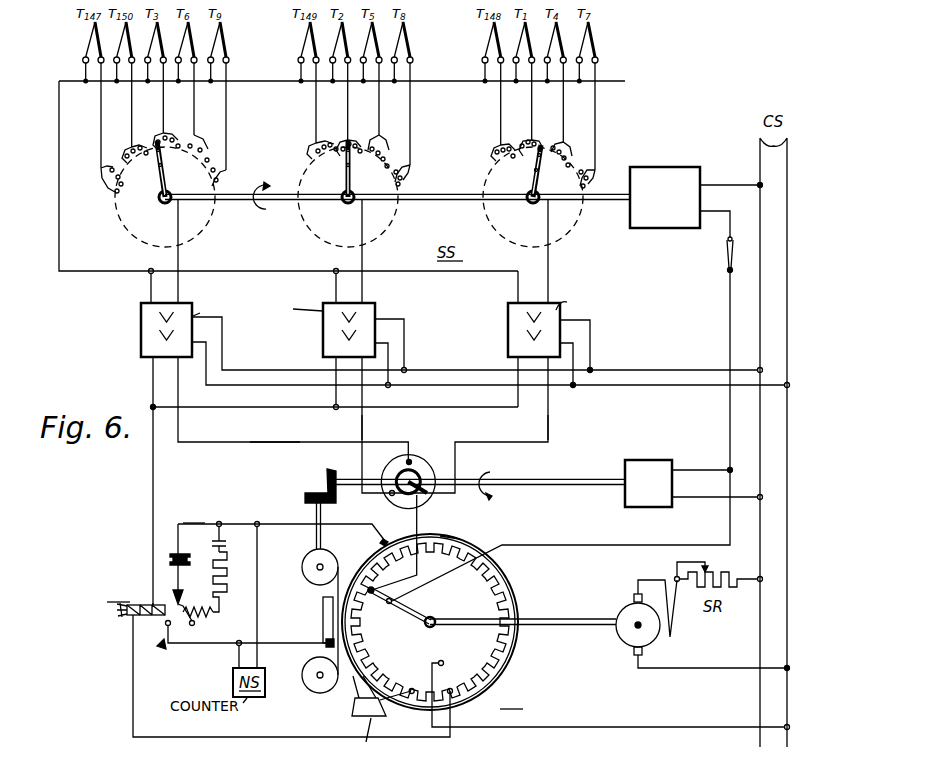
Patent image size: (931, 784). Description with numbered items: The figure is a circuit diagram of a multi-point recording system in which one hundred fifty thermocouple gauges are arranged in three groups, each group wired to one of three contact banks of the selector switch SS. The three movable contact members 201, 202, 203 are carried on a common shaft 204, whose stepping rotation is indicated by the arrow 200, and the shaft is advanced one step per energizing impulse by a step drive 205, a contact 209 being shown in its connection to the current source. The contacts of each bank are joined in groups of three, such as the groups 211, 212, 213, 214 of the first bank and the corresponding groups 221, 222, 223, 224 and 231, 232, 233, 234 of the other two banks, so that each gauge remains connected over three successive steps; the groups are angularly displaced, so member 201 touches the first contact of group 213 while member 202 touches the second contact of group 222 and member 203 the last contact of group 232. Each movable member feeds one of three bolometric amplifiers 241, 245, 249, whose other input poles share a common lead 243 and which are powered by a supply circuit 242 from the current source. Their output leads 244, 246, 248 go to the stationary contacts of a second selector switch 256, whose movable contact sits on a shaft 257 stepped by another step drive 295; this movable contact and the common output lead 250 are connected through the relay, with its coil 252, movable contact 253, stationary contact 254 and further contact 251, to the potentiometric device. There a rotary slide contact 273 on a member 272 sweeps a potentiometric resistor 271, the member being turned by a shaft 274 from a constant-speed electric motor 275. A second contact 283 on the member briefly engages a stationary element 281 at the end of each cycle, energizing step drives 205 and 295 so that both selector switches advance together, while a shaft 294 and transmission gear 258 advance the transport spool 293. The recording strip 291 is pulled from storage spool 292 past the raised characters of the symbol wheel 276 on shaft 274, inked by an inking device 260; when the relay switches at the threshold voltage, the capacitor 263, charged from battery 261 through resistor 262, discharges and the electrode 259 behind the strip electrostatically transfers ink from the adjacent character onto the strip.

The rotation direction arrow 200 is at (258, 213).
The movable contact member 201 is at (160, 194).
The movable contact member 202 is at (348, 193).
The movable contact member 203 is at (536, 182).
The common shaft 204 is at (426, 201).
The step drive 205 is at (662, 168).
The switch contact 209 is at (729, 250).
The contact group 211 is at (101, 185).
The contact group 212 is at (131, 146).
The contact group 213 is at (155, 137).
The contact group 214 is at (209, 151).
The contact bank 221 is at (317, 147).
The contact group 222 is at (342, 132).
The contact bank 223 is at (391, 144).
The contact bank 224 is at (411, 168).
The contact bank 231 is at (494, 156).
The contact group 232 is at (527, 134).
The contact bank 233 is at (575, 141).
The contact bank 234 is at (590, 178).
The amplifier 241 is at (141, 331).
The supply circuit 242 is at (422, 383).
The common lead 243 is at (248, 273).
The output lead 244 is at (270, 441).
The amplifier 245 is at (323, 331).
The output lead 246 is at (362, 428).
The output lead 248 is at (548, 428).
The amplifier 249 is at (508, 331).
The common output lead 250 is at (152, 516).
The switch contact 251 is at (232, 639).
The relay coil 252 is at (140, 617).
The relay contact 253 is at (195, 605).
The stationary contact 254 is at (195, 626).
The selector switch 256 is at (413, 460).
The shaft 257 is at (522, 487).
The mechanical transmission gear 258 is at (325, 481).
The electrode 259 is at (323, 616).
The inking device 260 is at (368, 713).
The battery 261 is at (212, 546).
The resistor 262 is at (227, 580).
The capacitor 263 is at (180, 570).
The potentiometric resistor 271 is at (507, 589).
The movable member 272 is at (424, 627).
The rotary slide contact 273 is at (396, 611).
The shaft 274 is at (545, 626).
The electric motor 275 is at (646, 645).
The symbol wheel 276 is at (449, 536).
The stationary element 281 is at (444, 664).
The second contact 283 is at (392, 601).
The recording strip 291 is at (323, 596).
The storage spool 292 is at (305, 672).
The transport spool 293 is at (303, 560).
The shaft 294 is at (322, 512).
The step drive 295 is at (642, 462).